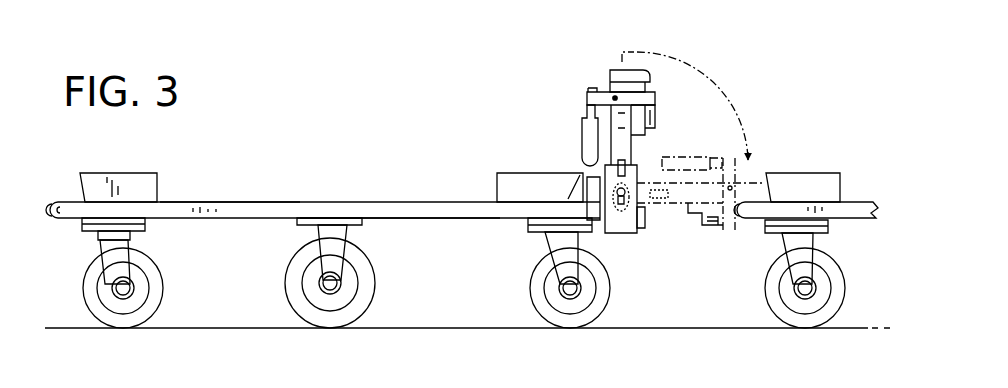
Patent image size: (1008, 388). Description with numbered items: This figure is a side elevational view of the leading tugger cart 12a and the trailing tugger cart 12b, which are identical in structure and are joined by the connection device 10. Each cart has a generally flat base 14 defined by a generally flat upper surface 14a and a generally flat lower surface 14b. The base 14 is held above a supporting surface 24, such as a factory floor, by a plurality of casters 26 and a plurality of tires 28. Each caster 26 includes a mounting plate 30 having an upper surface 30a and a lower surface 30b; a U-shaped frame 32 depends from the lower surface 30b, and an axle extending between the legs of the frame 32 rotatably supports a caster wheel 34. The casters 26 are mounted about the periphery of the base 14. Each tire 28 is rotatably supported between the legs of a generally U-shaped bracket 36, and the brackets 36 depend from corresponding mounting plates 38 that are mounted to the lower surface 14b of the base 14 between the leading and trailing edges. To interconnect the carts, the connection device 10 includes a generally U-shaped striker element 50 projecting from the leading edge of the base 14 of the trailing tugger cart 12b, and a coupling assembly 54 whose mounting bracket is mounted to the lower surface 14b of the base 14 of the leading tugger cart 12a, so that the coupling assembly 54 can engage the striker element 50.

The connection device 10 is at (712, 239).
The leading tugger cart 12a is at (432, 199).
The trailing tugger cart 12b is at (846, 199).
The base 14 is at (193, 226).
The upper surface 14a is at (240, 202).
The lower surface 14b is at (427, 219).
The supporting surface 24 is at (437, 326).
The casters 26 is at (82, 282).
The tires 28 is at (383, 295).
The mounting plate 30 is at (82, 224).
The upper surface 30a is at (127, 217).
The lower surface 30b is at (140, 231).
The U-shaped frame 32 is at (117, 266).
The caster wheel 34 is at (120, 320).
The U-shaped bracket 36 is at (325, 257).
The mounting plate 38 is at (325, 219).
The U-shaped striker element 50 is at (58, 196).
The coupling assembly 54 is at (590, 74).